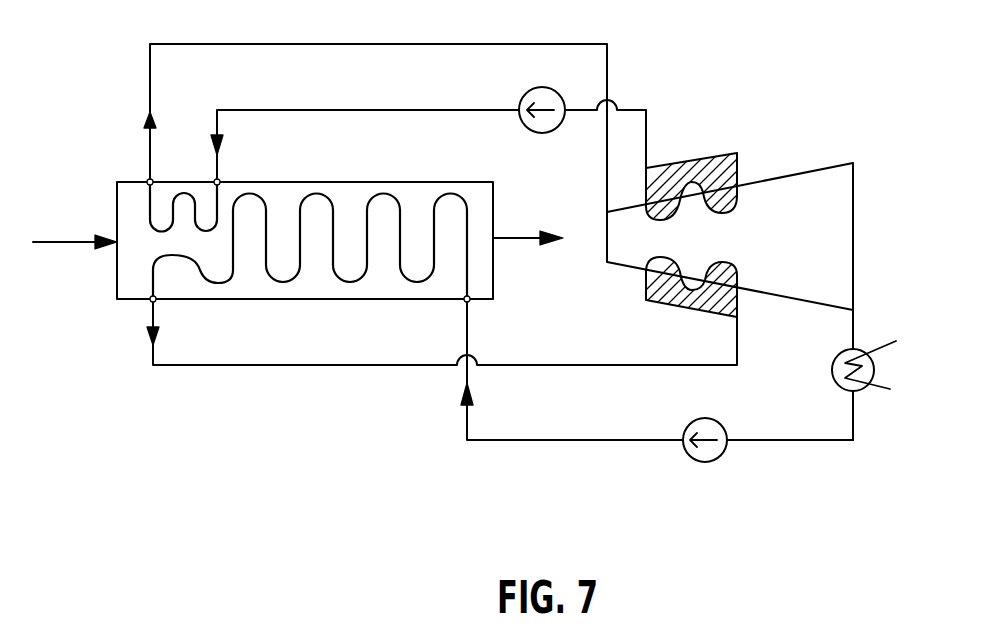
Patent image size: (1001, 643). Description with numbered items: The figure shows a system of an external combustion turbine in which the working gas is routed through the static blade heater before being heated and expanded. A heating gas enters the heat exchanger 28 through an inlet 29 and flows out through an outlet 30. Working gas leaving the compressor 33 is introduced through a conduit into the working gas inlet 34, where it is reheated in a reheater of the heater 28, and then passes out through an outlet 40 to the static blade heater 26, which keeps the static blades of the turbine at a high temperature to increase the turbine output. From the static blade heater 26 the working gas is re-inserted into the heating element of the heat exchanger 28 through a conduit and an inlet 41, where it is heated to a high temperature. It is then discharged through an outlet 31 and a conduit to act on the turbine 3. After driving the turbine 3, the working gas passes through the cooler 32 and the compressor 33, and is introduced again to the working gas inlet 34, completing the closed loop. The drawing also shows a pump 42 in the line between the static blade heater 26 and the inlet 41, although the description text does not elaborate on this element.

The turbine 3 is at (800, 173).
The static blade heater 26 is at (700, 163).
The heat exchanger 28 is at (378, 182).
The inlet 29 is at (62, 242).
The outlet 30 is at (532, 240).
The outlet 31 is at (150, 182).
The cooler 32 is at (832, 373).
The compressor 33 is at (693, 458).
The working gas inlet 34 is at (467, 299).
The outlet 40 is at (153, 322).
The inlet 41 is at (217, 182).
The circulation pump 42 is at (519, 102).